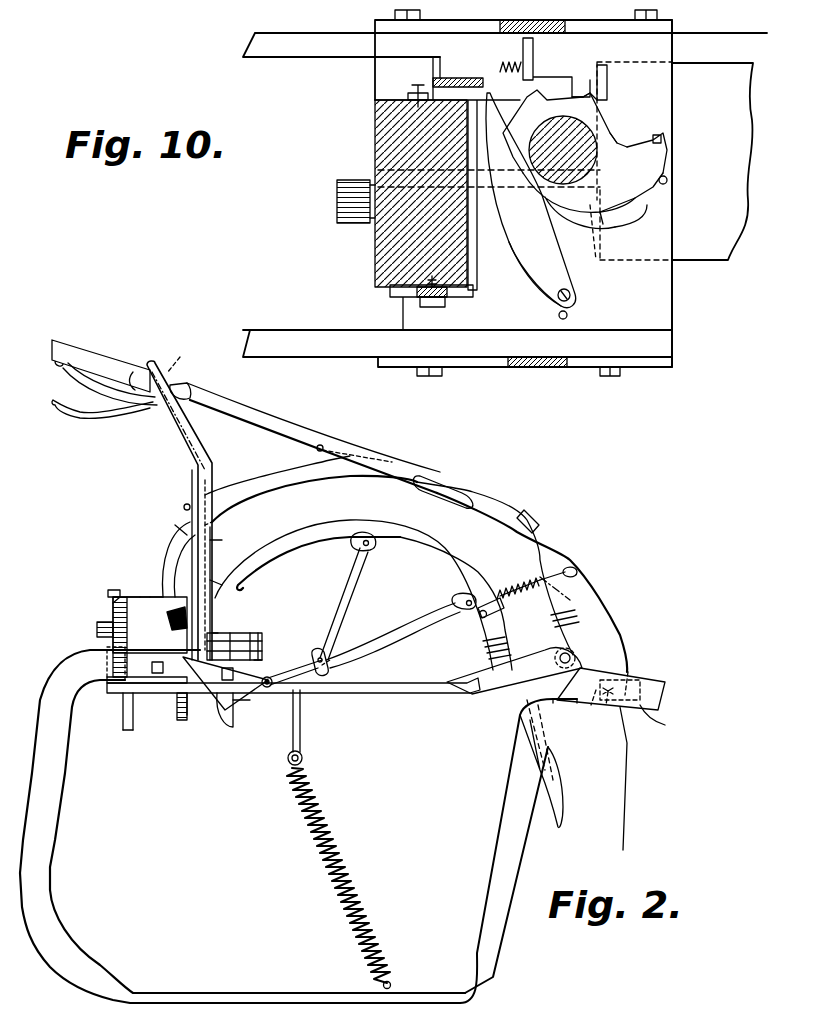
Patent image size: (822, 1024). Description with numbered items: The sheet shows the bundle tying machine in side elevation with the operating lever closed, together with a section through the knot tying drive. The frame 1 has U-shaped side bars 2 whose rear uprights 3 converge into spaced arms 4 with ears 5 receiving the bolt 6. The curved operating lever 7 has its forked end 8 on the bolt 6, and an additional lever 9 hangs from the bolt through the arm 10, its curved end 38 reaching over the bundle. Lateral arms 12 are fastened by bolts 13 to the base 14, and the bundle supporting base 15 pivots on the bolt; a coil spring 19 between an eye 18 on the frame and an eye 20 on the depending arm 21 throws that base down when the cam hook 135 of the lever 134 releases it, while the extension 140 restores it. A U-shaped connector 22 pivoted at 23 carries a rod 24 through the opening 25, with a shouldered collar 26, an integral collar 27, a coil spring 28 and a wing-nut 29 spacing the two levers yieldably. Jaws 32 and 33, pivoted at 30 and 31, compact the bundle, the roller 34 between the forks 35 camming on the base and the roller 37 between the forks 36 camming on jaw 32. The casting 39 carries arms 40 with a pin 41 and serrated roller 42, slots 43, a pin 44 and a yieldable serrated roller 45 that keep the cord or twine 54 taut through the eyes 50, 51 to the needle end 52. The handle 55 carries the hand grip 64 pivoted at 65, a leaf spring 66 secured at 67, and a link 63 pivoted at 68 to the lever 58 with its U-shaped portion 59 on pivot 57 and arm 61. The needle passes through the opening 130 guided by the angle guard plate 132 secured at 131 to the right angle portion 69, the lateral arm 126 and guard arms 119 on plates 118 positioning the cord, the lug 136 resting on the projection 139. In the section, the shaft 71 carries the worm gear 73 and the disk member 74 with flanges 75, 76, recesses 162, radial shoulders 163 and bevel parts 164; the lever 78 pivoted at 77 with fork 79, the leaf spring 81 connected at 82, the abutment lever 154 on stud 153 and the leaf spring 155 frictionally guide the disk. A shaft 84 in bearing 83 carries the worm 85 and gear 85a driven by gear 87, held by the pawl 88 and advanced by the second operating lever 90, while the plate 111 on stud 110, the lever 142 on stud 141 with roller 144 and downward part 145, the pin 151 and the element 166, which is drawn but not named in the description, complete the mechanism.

In FIG. 10, the frame 1 is at (308, 330).
In FIG. 2, the frame 1 is at (60, 775).
In FIG. 2, the side bars 2 is at (494, 863).
In FIG. 2, the rear uprights 3 is at (512, 906).
In FIG. 2, the lateral parallel spaced arms 4 is at (572, 699).
In FIG. 2, the ears 5 is at (585, 658).
In FIG. 2, the bolt 6 is at (564, 665).
In FIG. 2, the operating lever 7 is at (528, 514).
In FIG. 2, the forked end 8 is at (575, 632).
In FIG. 2, the lever 9 is at (448, 568).
In FIG. 2, the arm 10 is at (530, 660).
In FIG. 2, the lateral arms 12 is at (130, 705).
In FIG. 10, the bolts 13 is at (421, 13).
In FIG. 2, the bolts 13 is at (160, 683).
In FIG. 10, the base 14 is at (672, 300).
In FIG. 10, the bundle supporting base 15 is at (735, 250).
In FIG. 2, the bundle supporting base 15 is at (403, 693).
In FIG. 2, the eye 18 is at (392, 982).
In FIG. 2, the coil spring 19 is at (360, 872).
In FIG. 2, the eye 20 is at (303, 757).
In FIG. 2, the depending arm 21 is at (301, 716).
In FIG. 2, the U-shaped connector 22 is at (490, 603).
In FIG. 2, the pivot 23 is at (483, 610).
In FIG. 2, the rod 24 is at (533, 598).
In FIG. 2, the opening 25 is at (570, 600).
In FIG. 2, the shouldered collar 26 is at (555, 576).
In FIG. 2, the integral collar 27 is at (485, 645).
In FIG. 2, the coil spring 28 is at (515, 600).
In FIG. 2, the wing-nut 29 is at (576, 570).
In FIG. 2, the pivot 30 is at (466, 610).
In FIG. 2, the pivot 31 is at (368, 548).
In FIG. 2, the bundle compacting jaw 32 is at (410, 630).
In FIG. 2, the bundle compacting jaw 33 is at (342, 600).
In FIG. 2, the roller 34 is at (270, 678).
In FIG. 2, the forks 35 is at (312, 658).
In FIG. 2, the forks 36 is at (325, 655).
In FIG. 2, the roller 37 is at (327, 660).
In FIG. 2, the curved end 38 is at (248, 583).
In FIG. 2, the casting 39 is at (667, 688).
In FIG. 2, the parallel spaced arms 40 is at (591, 705).
In FIG. 2, the pin 41 is at (637, 682).
In FIG. 2, the serrated roller 42 is at (656, 720).
In FIG. 2, the elongated slots 43 is at (620, 688).
In FIG. 2, the pin 44 is at (606, 708).
In FIG. 2, the serrated roller 45 is at (629, 672).
In FIG. 2, the eye 50 is at (321, 440).
In FIG. 2, the eye 51 is at (185, 507).
In FIG. 2, the needle end 52 is at (172, 570).
In FIG. 2, the cord or twine 54 is at (255, 470).
In FIG. 2, the handle 55 is at (277, 418).
In FIG. 2, the pivot 57 is at (212, 545).
In FIG. 2, the lever 58 is at (214, 527).
In FIG. 2, the U-shaped portion 59 is at (176, 530).
In FIG. 2, the arm 61 is at (215, 520).
In FIG. 2, the link 63 is at (197, 473).
In FIG. 2, the hand grip 64 is at (97, 416).
In FIG. 2, the pivot 65 is at (181, 356).
In FIG. 2, the leaf spring 66 is at (113, 385).
In FIG. 2, the securing point 67 is at (72, 360).
In FIG. 2, the pivot connection 68 is at (190, 392).
In FIG. 10, the right angle portion 69 is at (375, 147).
In FIG. 10, the shaft 71 is at (592, 97).
In FIG. 10, the worm gear 73 is at (588, 92).
In FIG. 10, the disk member 74 is at (606, 226).
In FIG. 2, the upper flange 75 is at (240, 640).
In FIG. 10, the lower flange 76 is at (595, 122).
In FIG. 2, the lower flange 76 is at (192, 668).
In FIG. 10, the pivot 77 is at (668, 140).
In FIG. 10, the lever 78 is at (640, 207).
In FIG. 10, the fork 79 is at (598, 240).
In FIG. 10, the leaf spring 81 is at (630, 228).
In FIG. 2, the leaf spring 81 is at (262, 645).
In FIG. 10, the connection 82 is at (667, 183).
In FIG. 2, the connection 82 is at (260, 657).
In FIG. 10, the bearing 83 is at (392, 292).
In FIG. 2, the bearing 83 is at (135, 730).
In FIG. 10, the shaft 84 is at (415, 292).
In FIG. 10, the worm 85 is at (597, 262).
In FIG. 2, the worm 85 is at (188, 718).
In FIG. 10, the gear 85a is at (362, 225).
In FIG. 2, the gear 85a is at (110, 682).
In FIG. 2, the gear 87 is at (113, 615).
In FIG. 2, the pawl 88 is at (108, 594).
In FIG. 2, the second operating lever 90 is at (97, 629).
In FIG. 2, the screw stud 110 is at (190, 620).
In FIG. 2, the plate 111 is at (160, 633).
In FIG. 10, the plates 118 is at (674, 28).
In FIG. 2, the plates 118 is at (187, 718).
In FIG. 10, the guard arms 119 is at (535, 20).
In FIG. 2, the guard arms 119 is at (211, 560).
In FIG. 2, the lateral arm 126 is at (160, 595).
In FIG. 10, the opening 130 is at (603, 65).
In FIG. 10, the securing point 131 is at (418, 85).
In FIG. 10, the angle guard plate 132 is at (458, 78).
In FIG. 2, the lever 134 is at (225, 728).
In FIG. 2, the cam hook 135 is at (250, 703).
In FIG. 10, the lateral lug 136 is at (500, 62).
In FIG. 10, the projection 139 is at (558, 77).
In FIG. 2, the extension 140 is at (568, 767).
In FIG. 2, the screw stud 141 is at (148, 597).
In FIG. 2, the lever 142 is at (135, 597).
In FIG. 2, the roller 144 is at (113, 603).
In FIG. 2, the downwardly extending part 145 is at (210, 585).
In FIG. 10, the pin 151 is at (566, 318).
In FIG. 2, the pin 151 is at (220, 636).
In FIG. 10, the screw stud 153 is at (569, 300).
In FIG. 10, the abutment lever 154 is at (540, 278).
In FIG. 10, the leaf spring 155 is at (490, 260).
In FIG. 2, the leaf spring 155 is at (178, 660).
In FIG. 10, the recesses 162 is at (620, 140).
In FIG. 10, the radial shoulders 163 is at (648, 178).
In FIG. 10, the bevel parts 164 is at (618, 120).
In FIG. 10, the strip 166 is at (442, 60).